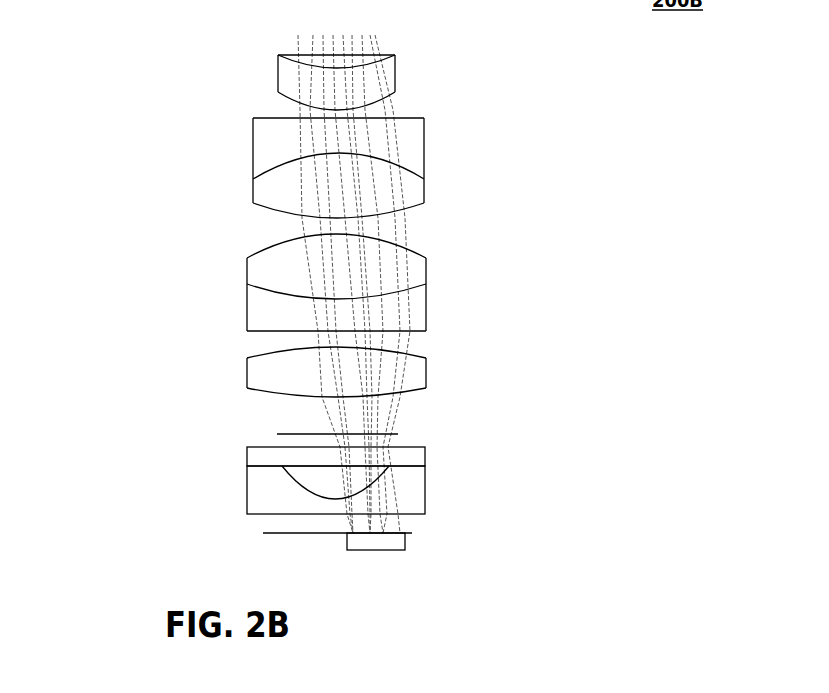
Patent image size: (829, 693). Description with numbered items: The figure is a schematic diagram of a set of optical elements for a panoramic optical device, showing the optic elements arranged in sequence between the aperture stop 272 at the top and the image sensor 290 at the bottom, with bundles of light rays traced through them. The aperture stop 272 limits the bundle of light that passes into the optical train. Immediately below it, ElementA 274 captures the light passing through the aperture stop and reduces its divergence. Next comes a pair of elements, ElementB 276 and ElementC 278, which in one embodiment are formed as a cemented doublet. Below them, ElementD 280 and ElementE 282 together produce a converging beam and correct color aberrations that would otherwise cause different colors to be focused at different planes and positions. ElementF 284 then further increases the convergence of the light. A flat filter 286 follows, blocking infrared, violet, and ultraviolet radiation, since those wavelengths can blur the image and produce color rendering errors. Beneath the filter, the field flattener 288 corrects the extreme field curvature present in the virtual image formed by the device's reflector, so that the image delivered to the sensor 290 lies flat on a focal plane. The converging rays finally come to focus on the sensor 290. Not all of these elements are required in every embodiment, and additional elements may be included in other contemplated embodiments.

The aperture stop 272 is at (303, 55).
The ElementA 274 is at (278, 80).
The ElementB 276 is at (268, 146).
The ElementC 278 is at (277, 183).
The ElementD 280 is at (262, 268).
The ElementE 282 is at (259, 316).
The ElementF 284 is at (265, 371).
The flat filter 286 is at (265, 457).
The field flattener 288 is at (265, 502).
The image sensor 290 is at (372, 540).